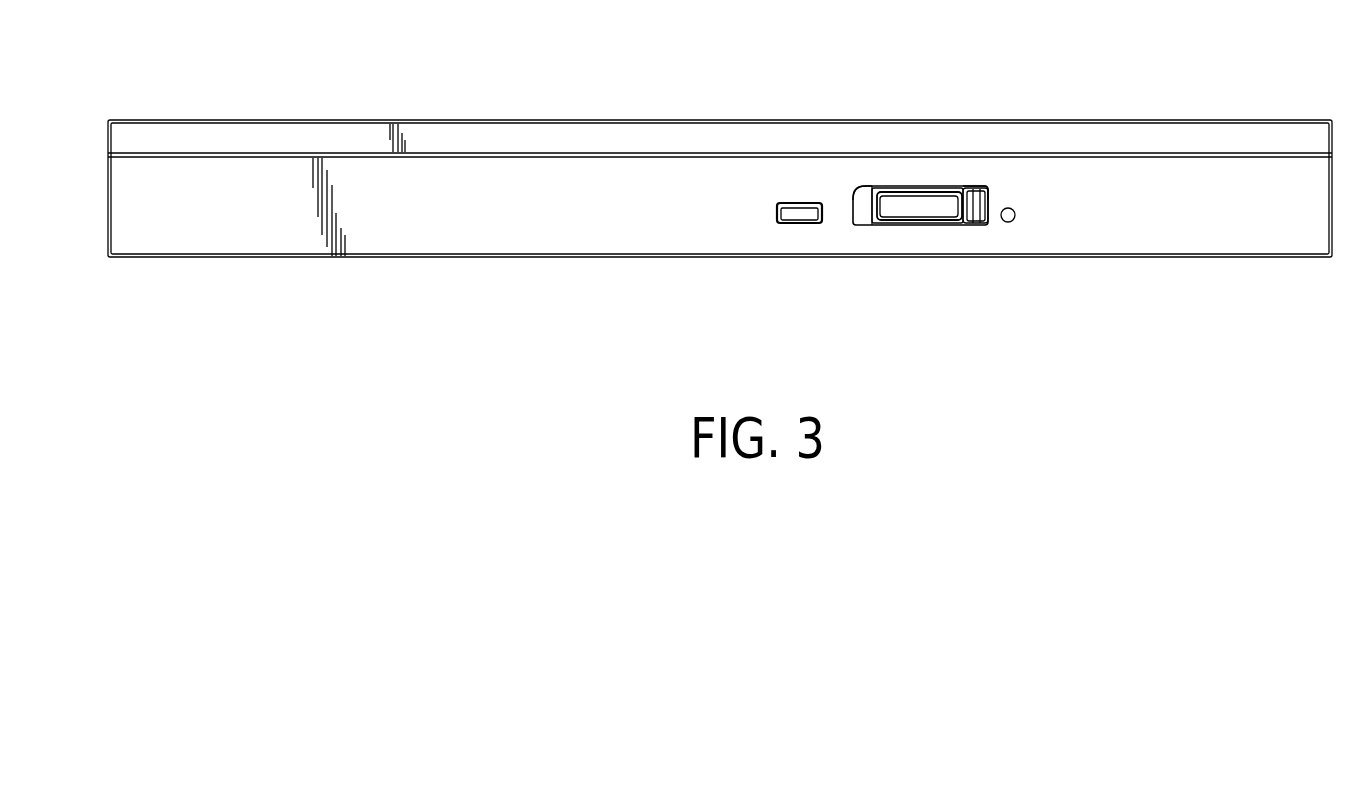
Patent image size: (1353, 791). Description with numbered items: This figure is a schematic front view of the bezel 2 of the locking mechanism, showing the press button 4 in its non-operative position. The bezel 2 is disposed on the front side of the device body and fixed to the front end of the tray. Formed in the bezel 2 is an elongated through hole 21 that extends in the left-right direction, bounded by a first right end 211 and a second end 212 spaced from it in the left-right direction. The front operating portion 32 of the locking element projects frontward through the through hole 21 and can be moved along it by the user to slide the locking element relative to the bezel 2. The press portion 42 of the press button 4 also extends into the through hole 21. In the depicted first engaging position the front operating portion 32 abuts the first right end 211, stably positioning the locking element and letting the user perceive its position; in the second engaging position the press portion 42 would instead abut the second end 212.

The bezel 2 is at (1060, 118).
The through hole 21 is at (945, 228).
The first right end 211 is at (990, 197).
The second end 212 is at (852, 195).
The front operating portion 32 is at (982, 225).
The press button 4 is at (858, 222).
The press portion 42 is at (916, 218).